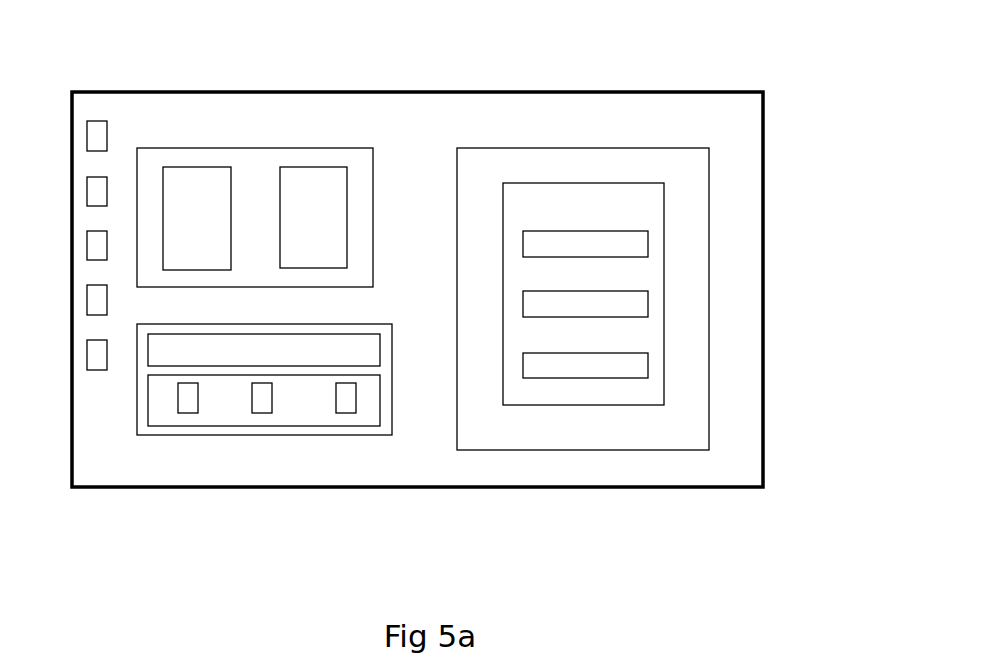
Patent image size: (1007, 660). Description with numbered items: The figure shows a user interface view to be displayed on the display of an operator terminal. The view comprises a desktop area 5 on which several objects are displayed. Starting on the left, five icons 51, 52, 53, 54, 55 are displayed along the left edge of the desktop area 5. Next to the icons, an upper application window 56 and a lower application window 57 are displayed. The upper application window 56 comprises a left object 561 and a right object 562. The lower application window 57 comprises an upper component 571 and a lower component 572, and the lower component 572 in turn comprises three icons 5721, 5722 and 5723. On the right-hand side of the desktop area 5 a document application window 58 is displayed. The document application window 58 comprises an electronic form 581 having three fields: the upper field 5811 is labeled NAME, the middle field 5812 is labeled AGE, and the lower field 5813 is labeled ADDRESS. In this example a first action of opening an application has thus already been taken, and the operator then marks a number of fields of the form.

The desktop area 5 is at (747, 488).
The icon 51 is at (97, 121).
The icon 52 is at (88, 192).
The icon 53 is at (88, 247).
The icon 54 is at (88, 299).
The icon 55 is at (88, 354).
The upper application window 56 is at (253, 148).
The left object 561 is at (197, 167).
The right object 562 is at (310, 167).
The lower application window 57 is at (392, 435).
The upper component 571 is at (147, 348).
The lower component 572 is at (162, 427).
The icon 5721 is at (192, 414).
The icon 5722 is at (266, 414).
The icon 5723 is at (347, 414).
The document application window 58 is at (512, 450).
The electronic form 581 is at (627, 405).
The upper field 5811 is at (650, 240).
The middle field 5812 is at (650, 300).
The lower field 5813 is at (650, 365).